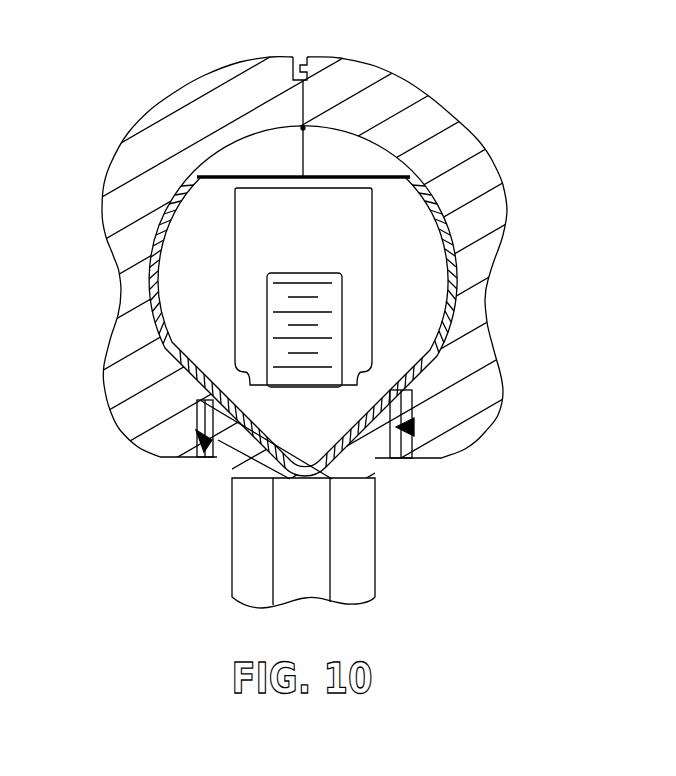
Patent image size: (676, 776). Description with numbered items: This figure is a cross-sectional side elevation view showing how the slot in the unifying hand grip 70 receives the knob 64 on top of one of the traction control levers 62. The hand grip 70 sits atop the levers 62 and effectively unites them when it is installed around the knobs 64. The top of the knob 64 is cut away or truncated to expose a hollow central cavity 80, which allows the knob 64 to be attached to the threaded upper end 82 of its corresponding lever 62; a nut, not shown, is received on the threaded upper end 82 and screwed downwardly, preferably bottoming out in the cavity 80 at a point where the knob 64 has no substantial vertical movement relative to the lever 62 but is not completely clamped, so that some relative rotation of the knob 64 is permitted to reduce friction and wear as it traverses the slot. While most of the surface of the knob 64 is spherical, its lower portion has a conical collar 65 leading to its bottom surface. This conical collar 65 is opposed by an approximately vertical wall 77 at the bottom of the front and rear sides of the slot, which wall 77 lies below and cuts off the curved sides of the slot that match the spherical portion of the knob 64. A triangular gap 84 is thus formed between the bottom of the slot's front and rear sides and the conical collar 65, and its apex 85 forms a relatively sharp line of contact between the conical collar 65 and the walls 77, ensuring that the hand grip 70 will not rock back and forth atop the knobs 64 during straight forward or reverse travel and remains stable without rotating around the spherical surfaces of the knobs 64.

The hand grip 70 is at (447, 108).
The knob 64 is at (412, 254).
The hollow central cavity 80 is at (281, 244).
The threaded upper end 82 is at (263, 300).
The apex 85 is at (187, 388).
The vertical wall 77 is at (195, 428).
The triangular gap 84 is at (178, 462).
The conical collar 65 is at (380, 440).
The control lever 62 is at (358, 551).